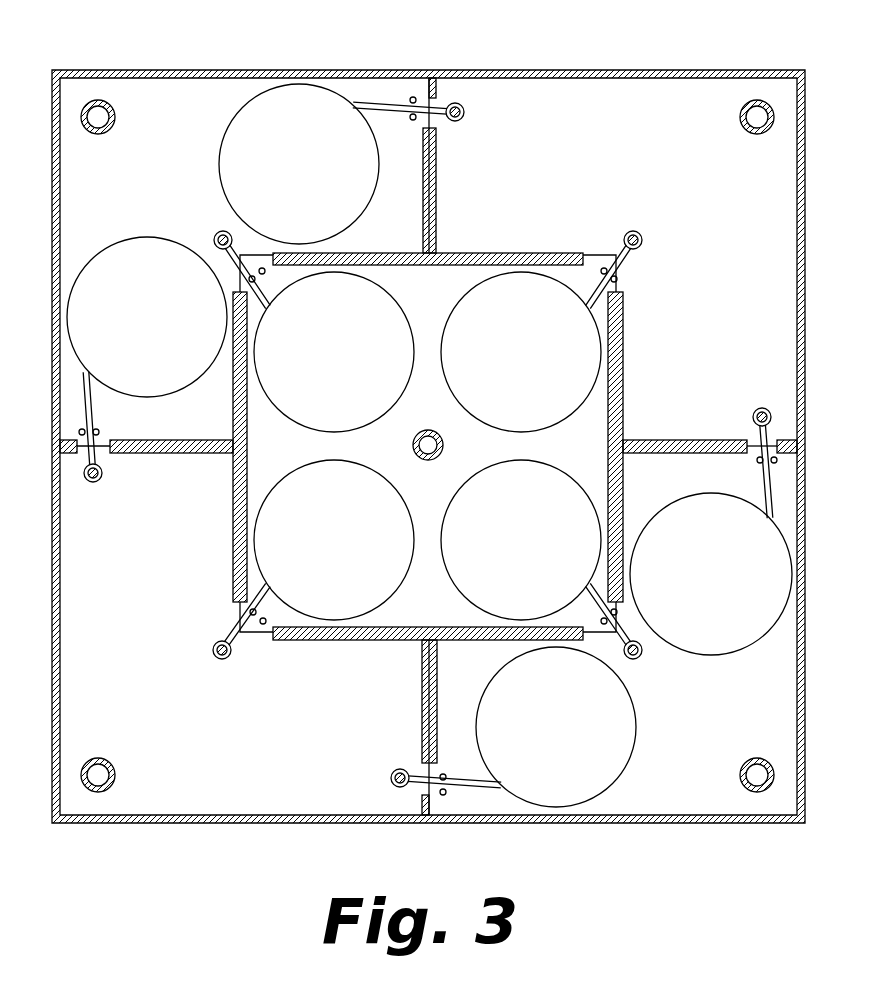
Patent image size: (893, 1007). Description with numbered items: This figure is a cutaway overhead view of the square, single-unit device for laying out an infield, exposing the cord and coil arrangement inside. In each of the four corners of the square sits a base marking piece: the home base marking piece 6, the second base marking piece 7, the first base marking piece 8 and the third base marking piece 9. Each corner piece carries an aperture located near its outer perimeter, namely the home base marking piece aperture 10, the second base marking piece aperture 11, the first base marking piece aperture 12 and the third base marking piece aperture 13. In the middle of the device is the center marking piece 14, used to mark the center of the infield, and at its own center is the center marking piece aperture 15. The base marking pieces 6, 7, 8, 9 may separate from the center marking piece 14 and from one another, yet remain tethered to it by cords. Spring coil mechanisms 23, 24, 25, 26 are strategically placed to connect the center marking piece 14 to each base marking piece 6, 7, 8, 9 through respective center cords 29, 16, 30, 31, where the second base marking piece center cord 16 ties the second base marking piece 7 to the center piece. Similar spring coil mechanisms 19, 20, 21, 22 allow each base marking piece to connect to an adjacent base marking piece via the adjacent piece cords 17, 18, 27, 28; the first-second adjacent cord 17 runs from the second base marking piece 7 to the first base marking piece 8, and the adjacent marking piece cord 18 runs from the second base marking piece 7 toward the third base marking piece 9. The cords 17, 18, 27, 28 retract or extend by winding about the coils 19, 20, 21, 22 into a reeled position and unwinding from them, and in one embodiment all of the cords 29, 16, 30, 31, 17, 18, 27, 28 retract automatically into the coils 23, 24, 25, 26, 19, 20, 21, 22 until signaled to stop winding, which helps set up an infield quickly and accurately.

The home base marking piece 6 is at (723, 713).
The second base marking piece 7 is at (147, 144).
The first base marking piece 8 is at (664, 149).
The third base marking piece 9 is at (114, 701).
The home base marking piece aperture 10 is at (757, 782).
The second base marking piece aperture 11 is at (98, 112).
The first base marking piece aperture 12 is at (757, 112).
The third base marking piece aperture 13 is at (98, 782).
The center marking piece 14 is at (415, 412).
The center marking piece aperture 15 is at (429, 460).
The second base marking piece center cord 16 is at (236, 238).
The first-second adjacent cord 17 is at (392, 108).
The adjacent marking piece cord 18 is at (90, 404).
The spring coil mechanism 19 is at (284, 178).
The spring coil mechanism 20 is at (130, 333).
The spring coil mechanism 21 is at (543, 740).
The spring coil mechanism 22 is at (698, 588).
The spring coil mechanism 23 is at (508, 554).
The spring coil mechanism 24 is at (321, 366).
The spring coil mechanism 25 is at (508, 366).
The spring coil mechanism 26 is at (321, 554).
The adjacent piece cord 27 is at (412, 772).
The adjacent piece cord 28 is at (760, 428).
The center cord 29 is at (643, 652).
The center cord 30 is at (620, 250).
The center cord 31 is at (236, 650).